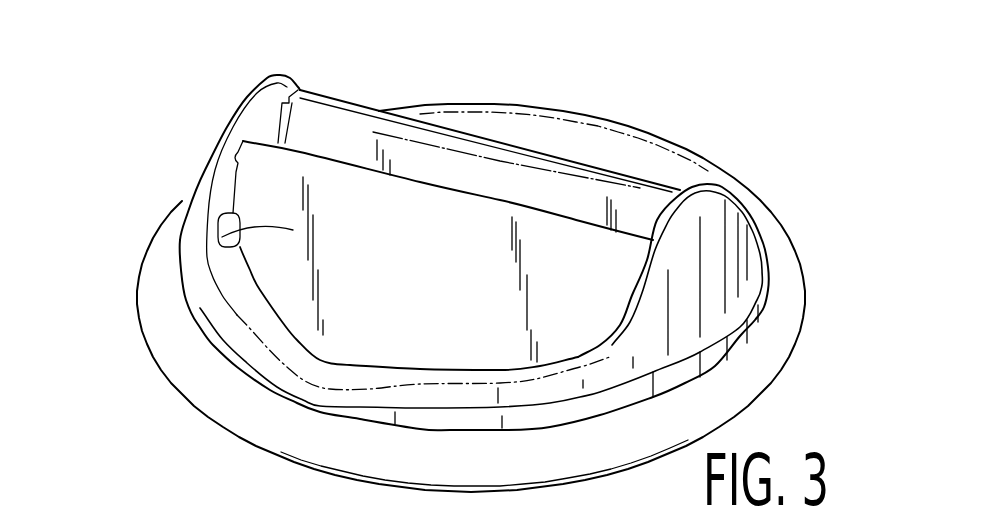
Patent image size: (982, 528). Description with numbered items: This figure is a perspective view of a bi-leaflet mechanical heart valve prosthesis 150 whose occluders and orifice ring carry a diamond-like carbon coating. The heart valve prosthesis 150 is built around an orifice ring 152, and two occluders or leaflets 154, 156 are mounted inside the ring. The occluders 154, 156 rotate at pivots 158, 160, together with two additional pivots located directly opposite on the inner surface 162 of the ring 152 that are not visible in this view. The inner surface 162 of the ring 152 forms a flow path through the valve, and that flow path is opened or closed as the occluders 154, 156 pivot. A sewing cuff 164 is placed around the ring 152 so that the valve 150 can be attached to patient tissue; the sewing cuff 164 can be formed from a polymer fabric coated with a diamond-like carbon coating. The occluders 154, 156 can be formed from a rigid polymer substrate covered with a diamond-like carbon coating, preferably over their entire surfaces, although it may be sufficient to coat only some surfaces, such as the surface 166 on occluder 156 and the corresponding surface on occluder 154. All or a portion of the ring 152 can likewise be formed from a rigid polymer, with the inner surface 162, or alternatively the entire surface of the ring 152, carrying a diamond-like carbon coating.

The bi-leaflet mechanical heart valve prosthesis 150 is at (158, 408).
The orifice ring 152 is at (655, 135).
The occluder 154 is at (334, 122).
The occluder 156 is at (250, 157).
The pivot 158 is at (222, 218).
The pivot 160 is at (270, 130).
The inner surface 162 is at (500, 127).
The sewing cuff 164 is at (773, 340).
The surface 166 is at (215, 247).